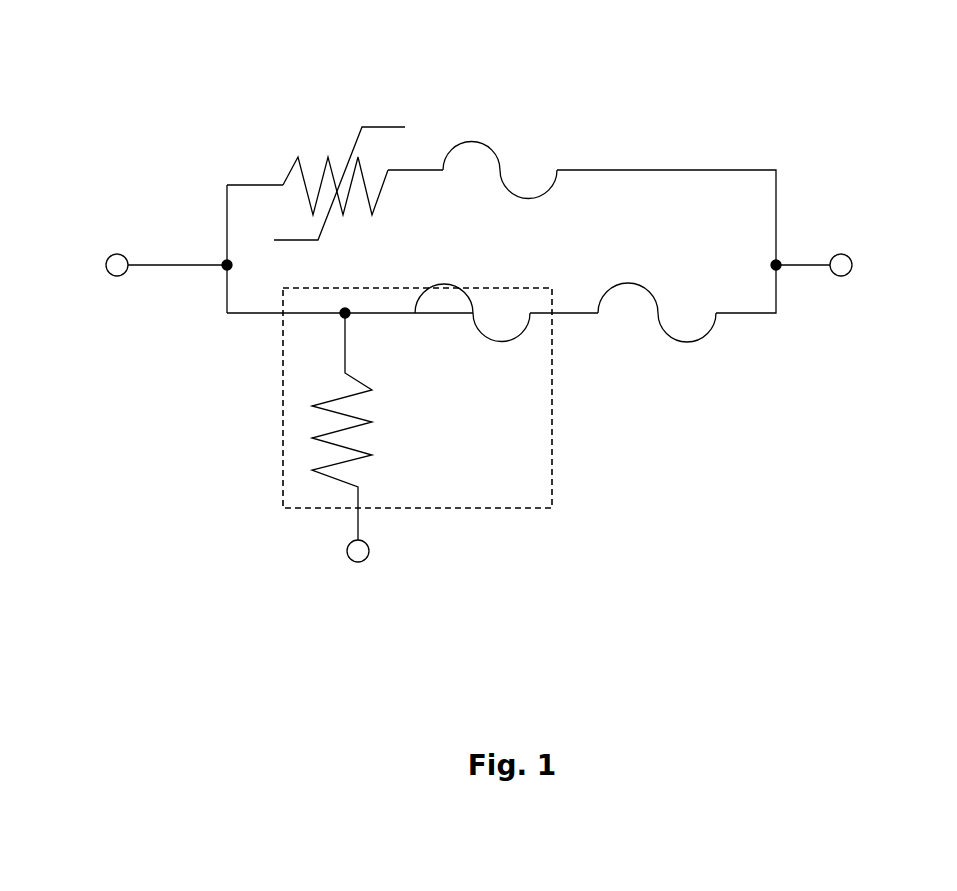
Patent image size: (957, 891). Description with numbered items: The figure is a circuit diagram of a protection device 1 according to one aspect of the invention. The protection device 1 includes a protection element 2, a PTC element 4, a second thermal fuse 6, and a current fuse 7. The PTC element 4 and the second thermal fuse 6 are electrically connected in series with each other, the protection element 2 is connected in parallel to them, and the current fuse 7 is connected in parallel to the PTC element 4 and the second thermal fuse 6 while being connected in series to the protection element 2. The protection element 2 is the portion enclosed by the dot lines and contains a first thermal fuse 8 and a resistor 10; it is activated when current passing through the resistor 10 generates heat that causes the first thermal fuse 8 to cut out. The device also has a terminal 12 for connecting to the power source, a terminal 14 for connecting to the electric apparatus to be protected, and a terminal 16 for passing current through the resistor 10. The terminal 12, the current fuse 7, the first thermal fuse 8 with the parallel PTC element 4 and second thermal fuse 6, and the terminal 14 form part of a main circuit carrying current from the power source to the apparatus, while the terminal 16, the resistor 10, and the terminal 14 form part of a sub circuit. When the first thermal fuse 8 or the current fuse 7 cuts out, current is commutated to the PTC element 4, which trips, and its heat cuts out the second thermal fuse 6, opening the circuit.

The protection device 1 is at (113, 123).
The protection element 2 is at (436, 400).
The PTC element 4 is at (339, 165).
The second thermal fuse 6 is at (500, 149).
The current fuse 7 is at (657, 326).
The first thermal fuse 8 is at (472, 326).
The resistor 10 is at (367, 424).
The terminal 12 is at (834, 265).
The terminal 14 is at (146, 265).
The terminal 16 is at (358, 571).